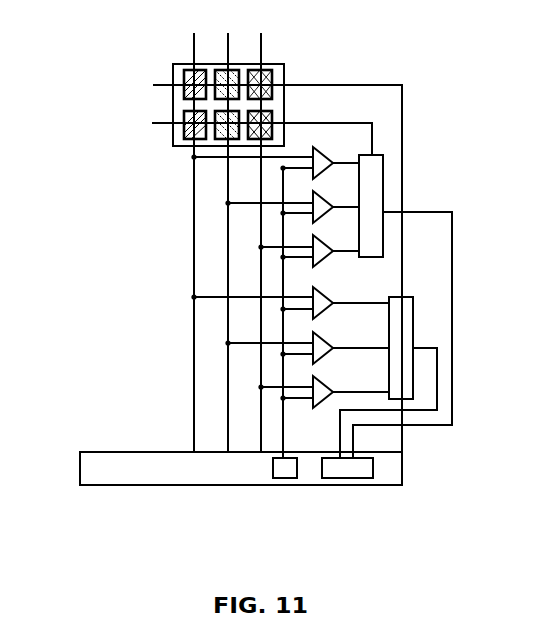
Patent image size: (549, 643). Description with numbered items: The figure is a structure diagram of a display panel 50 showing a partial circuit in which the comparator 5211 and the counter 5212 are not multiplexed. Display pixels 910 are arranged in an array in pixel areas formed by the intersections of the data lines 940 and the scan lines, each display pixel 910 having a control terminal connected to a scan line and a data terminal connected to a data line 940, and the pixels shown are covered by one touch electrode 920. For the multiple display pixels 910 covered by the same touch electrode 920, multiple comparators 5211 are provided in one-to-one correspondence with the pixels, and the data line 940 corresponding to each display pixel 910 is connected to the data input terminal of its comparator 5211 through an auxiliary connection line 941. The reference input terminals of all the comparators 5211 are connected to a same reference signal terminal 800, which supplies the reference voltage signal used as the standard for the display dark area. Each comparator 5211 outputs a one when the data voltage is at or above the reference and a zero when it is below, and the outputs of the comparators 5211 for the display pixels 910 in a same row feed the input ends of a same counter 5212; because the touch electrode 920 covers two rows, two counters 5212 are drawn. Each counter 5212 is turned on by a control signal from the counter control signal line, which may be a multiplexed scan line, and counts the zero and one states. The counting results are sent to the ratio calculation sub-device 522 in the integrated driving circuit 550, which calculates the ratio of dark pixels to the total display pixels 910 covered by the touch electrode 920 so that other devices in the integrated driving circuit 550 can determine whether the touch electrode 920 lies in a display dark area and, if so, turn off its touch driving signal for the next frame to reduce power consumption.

The display panel 50 is at (224, 84).
The display pixel 910 is at (278, 70).
The touch electrode 920 is at (284, 64).
The data line 940 is at (194, 200).
The auxiliary connection line 941 is at (194, 297).
The comparator 5211 is at (318, 262).
The counter 5212 is at (383, 182).
The integrated driving circuit 550 is at (402, 465).
The reference signal terminal 800 is at (283, 480).
The ratio calculation sub-device 522 is at (353, 480).